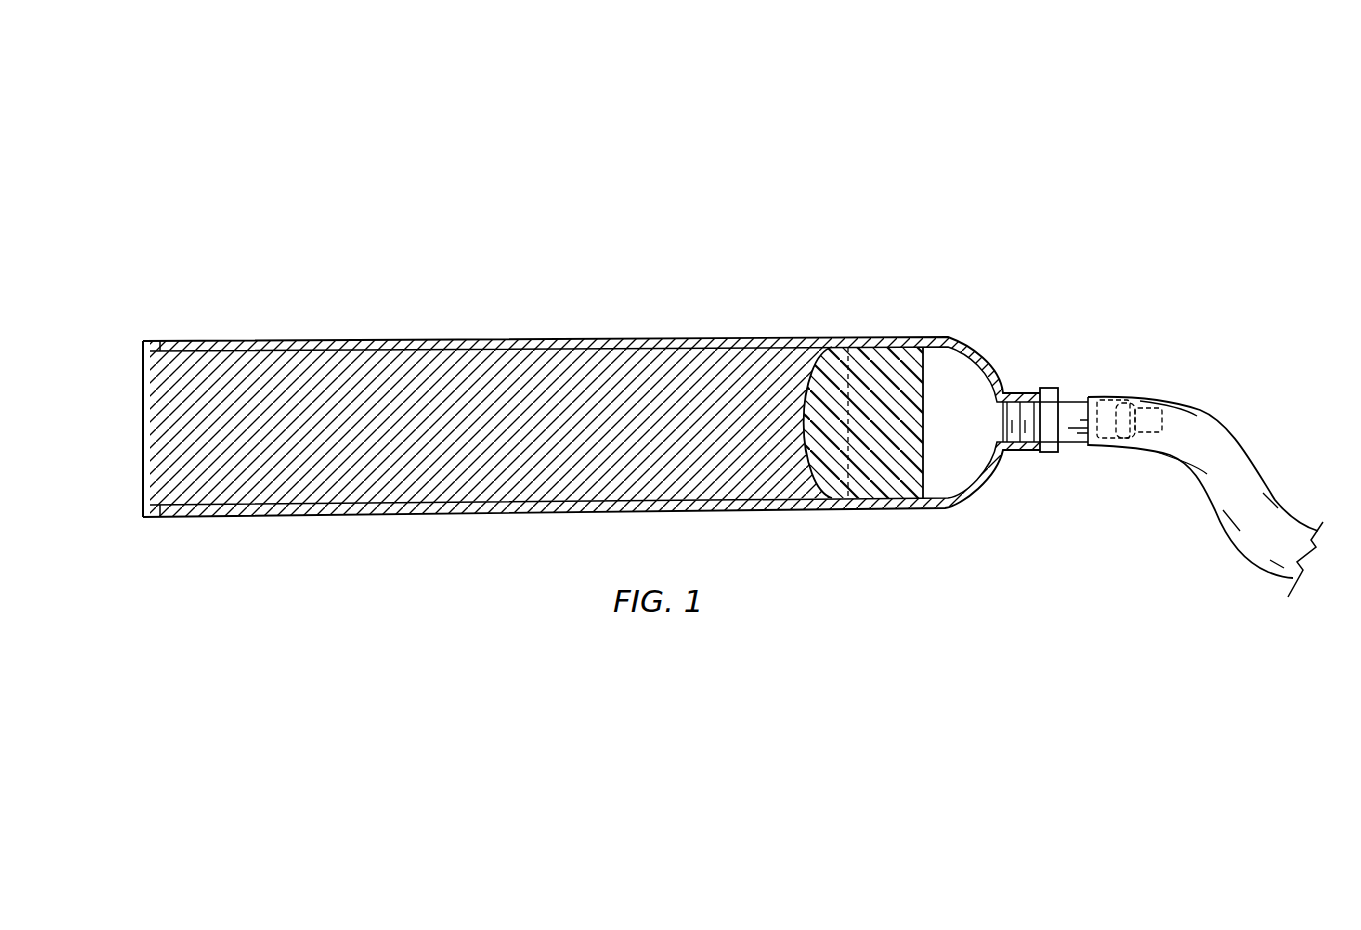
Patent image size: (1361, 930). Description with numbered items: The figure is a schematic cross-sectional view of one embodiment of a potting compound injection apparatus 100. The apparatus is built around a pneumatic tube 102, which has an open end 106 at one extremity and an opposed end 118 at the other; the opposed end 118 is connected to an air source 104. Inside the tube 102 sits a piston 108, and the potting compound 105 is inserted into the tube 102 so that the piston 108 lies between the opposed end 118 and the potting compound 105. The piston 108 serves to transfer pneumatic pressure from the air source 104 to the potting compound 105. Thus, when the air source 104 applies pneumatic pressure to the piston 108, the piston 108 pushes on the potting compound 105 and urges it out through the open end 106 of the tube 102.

The potting compound injection apparatus 100 is at (860, 157).
The pneumatic tube 102 is at (662, 338).
The air source 104 is at (1233, 455).
The potting compound 105 is at (382, 460).
The open end 106 is at (142, 432).
The piston 108 is at (896, 372).
The opposed end 118 is at (1045, 430).